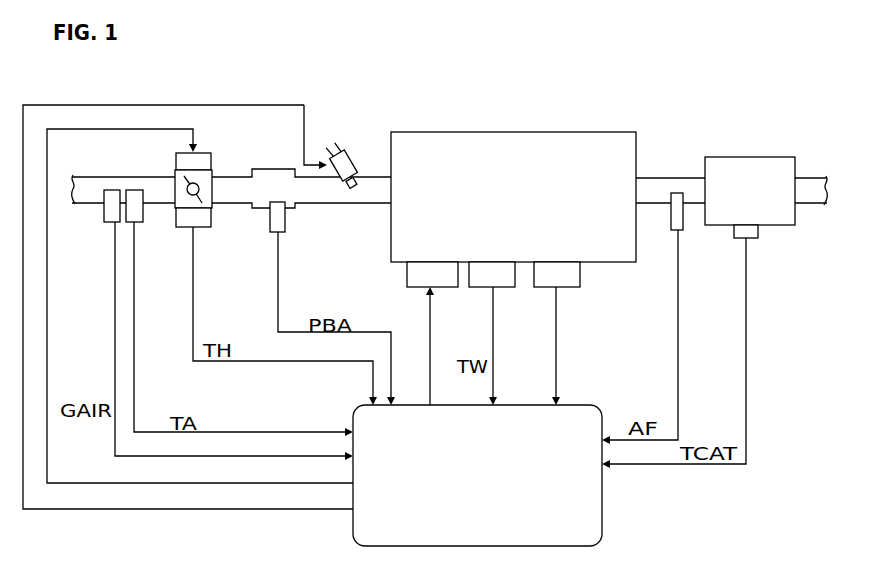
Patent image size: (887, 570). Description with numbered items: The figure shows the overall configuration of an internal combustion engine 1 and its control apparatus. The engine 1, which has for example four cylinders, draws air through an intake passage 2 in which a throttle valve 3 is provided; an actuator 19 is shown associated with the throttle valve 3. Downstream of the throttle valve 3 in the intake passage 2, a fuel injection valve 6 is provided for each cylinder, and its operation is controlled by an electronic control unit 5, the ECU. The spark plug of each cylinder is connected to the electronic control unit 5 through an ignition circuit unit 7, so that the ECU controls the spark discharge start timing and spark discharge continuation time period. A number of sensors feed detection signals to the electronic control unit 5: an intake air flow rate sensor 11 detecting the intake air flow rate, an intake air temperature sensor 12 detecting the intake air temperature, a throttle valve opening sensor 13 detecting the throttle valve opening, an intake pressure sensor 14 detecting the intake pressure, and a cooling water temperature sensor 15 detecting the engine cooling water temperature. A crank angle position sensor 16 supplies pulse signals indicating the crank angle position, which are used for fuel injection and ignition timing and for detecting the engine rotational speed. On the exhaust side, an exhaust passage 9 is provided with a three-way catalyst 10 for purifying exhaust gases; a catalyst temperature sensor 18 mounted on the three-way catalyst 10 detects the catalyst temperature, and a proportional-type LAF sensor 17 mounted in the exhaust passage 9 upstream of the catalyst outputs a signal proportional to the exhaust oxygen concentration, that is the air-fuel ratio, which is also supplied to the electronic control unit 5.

The internal combustion engine 1 is at (585, 132).
The intake passage 2 is at (335, 200).
The throttle valve 3 is at (185, 178).
The electronic control unit 5 is at (533, 405).
The fuel injection valve 6 is at (352, 158).
The ignition circuit unit 7 is at (448, 288).
The exhaust passage 9 is at (675, 178).
The three-way catalyst 10 is at (753, 157).
The intake air flow rate sensor 11 is at (108, 222).
The intake air temperature sensor 12 is at (135, 222).
The throttle valve opening sensor 13 is at (203, 227).
The intake pressure sensor 14 is at (282, 232).
The cooling water temperature sensor 15 is at (507, 288).
The crank angle position sensor 16 is at (570, 288).
The LAF sensor 17 is at (680, 230).
The catalyst temperature sensor 18 is at (752, 238).
The actuator 19 is at (200, 152).